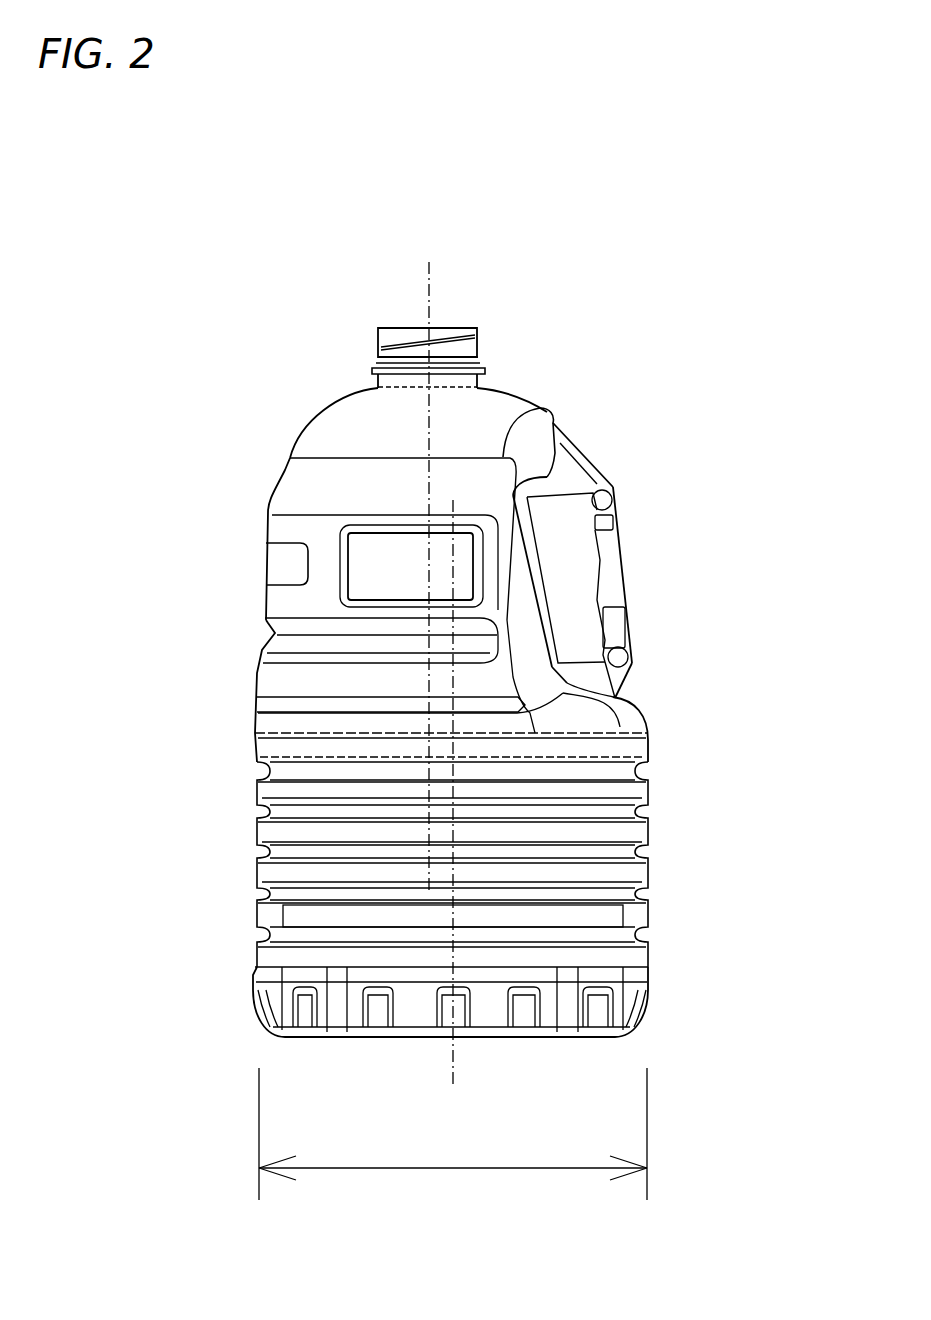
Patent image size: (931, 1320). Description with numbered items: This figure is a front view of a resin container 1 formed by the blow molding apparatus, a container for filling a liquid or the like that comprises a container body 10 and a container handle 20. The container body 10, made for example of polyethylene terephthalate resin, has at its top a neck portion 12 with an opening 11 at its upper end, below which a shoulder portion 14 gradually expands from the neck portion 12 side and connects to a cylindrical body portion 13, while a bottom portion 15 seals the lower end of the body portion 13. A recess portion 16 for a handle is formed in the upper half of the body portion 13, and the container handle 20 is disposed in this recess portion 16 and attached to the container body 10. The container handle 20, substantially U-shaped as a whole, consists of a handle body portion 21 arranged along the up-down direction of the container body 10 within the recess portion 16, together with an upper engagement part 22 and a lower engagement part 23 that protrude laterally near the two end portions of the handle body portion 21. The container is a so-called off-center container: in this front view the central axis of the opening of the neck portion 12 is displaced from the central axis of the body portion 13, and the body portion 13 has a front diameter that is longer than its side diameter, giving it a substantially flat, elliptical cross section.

The resin container 1 is at (684, 191).
The container body 10 is at (193, 733).
The opening 11 is at (445, 328).
The neck portion 12 is at (478, 352).
The body portion 13 is at (612, 872).
The shoulder portion 14 is at (325, 430).
The bottom portion 15 is at (547, 1037).
The recess portion 16 is at (613, 710).
The container handle 20 is at (730, 452).
The handle body portion 21 is at (607, 563).
The upper engagement part 22 is at (583, 462).
The lower engagement part 23 is at (627, 680).